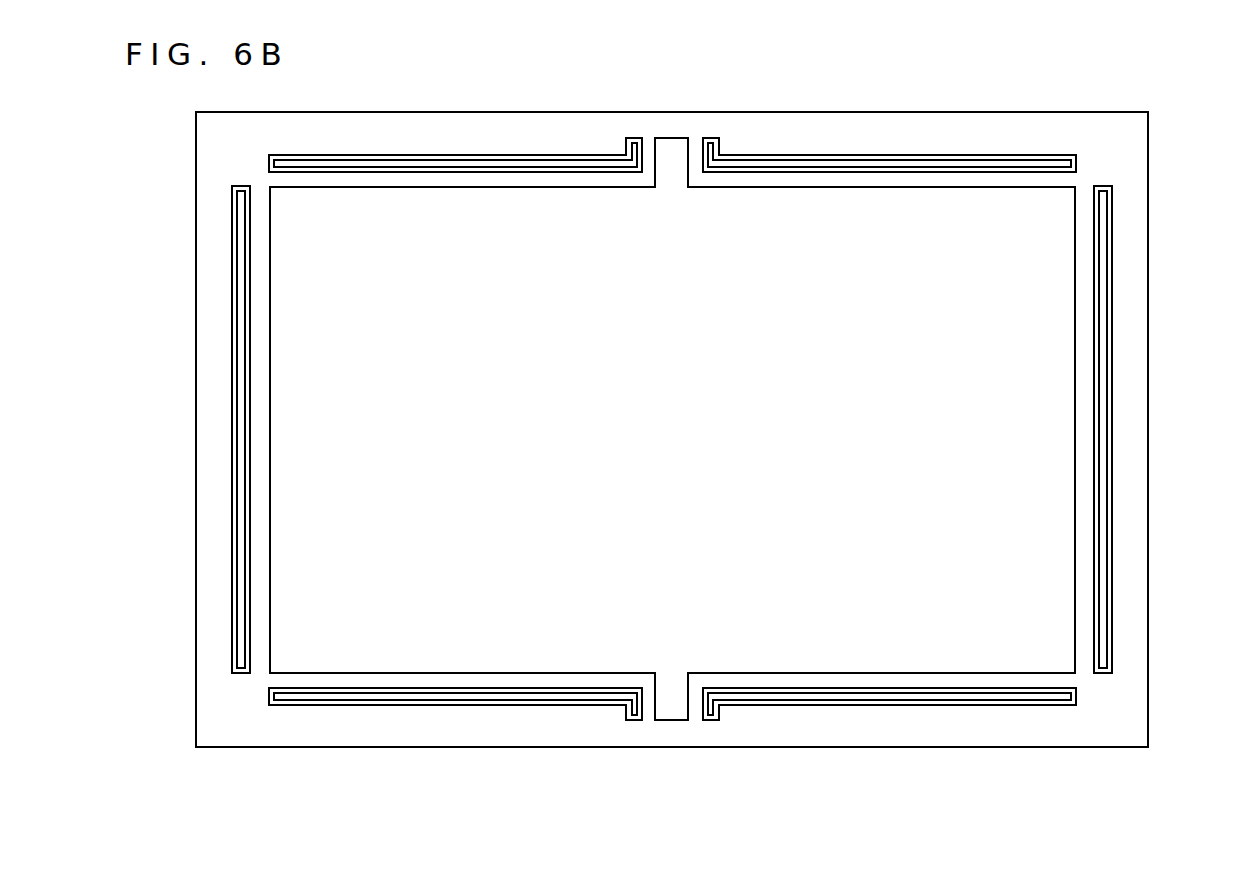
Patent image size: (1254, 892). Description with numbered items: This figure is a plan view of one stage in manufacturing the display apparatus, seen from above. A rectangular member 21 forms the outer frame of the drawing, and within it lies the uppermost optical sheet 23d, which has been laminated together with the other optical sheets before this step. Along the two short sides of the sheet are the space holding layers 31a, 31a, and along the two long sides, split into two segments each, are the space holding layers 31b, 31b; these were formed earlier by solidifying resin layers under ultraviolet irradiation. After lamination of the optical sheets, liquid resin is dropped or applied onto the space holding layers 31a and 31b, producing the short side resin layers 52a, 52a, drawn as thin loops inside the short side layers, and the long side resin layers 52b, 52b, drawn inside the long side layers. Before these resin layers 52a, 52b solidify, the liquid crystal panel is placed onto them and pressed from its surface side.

The substrate 21 is at (983, 733).
The optical sheet 23d is at (1063, 653).
The space holding layer 31a is at (237, 294).
The space holding layer 31b is at (543, 157).
The short side resin layer 52a is at (243, 347).
The long side resin layer 52b is at (387, 160).